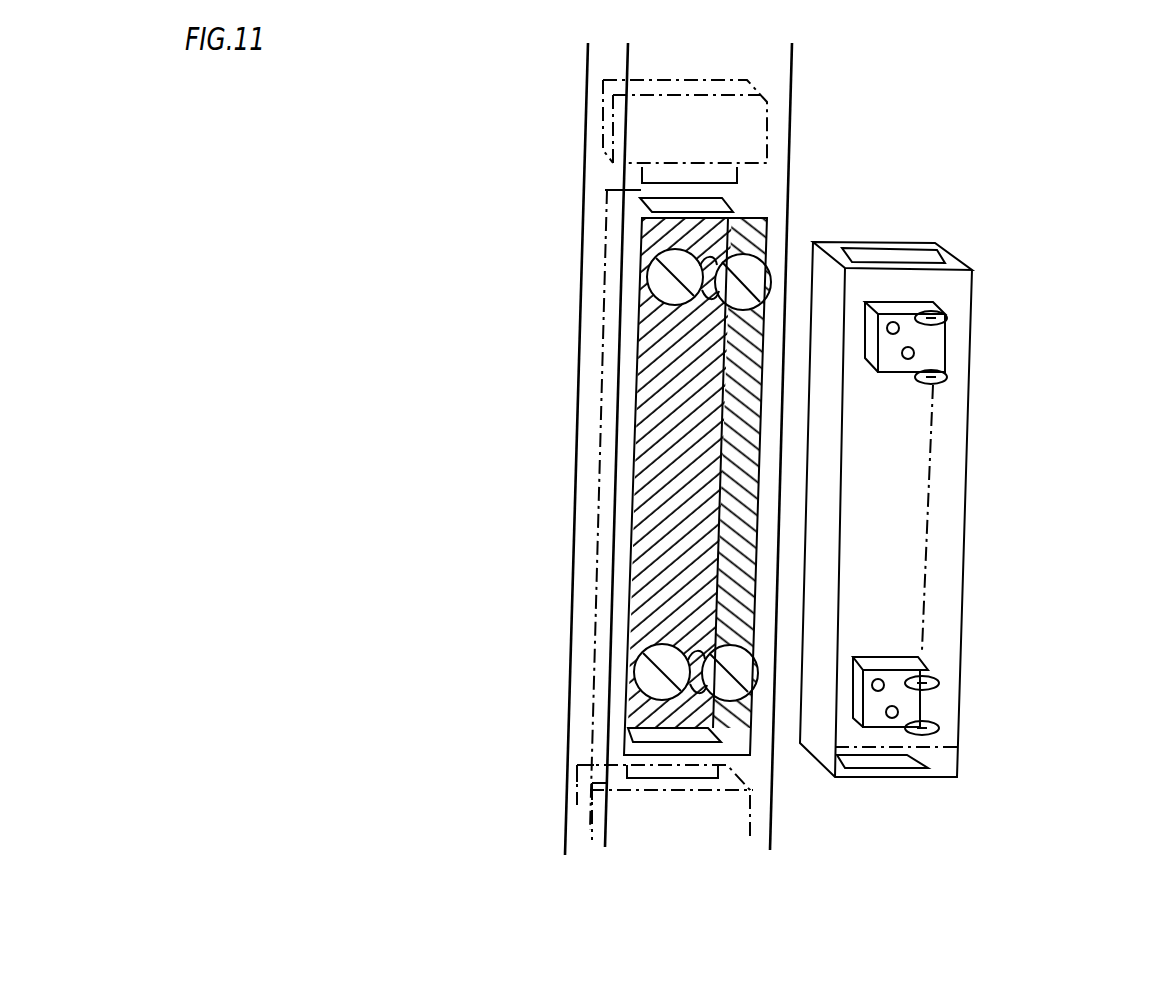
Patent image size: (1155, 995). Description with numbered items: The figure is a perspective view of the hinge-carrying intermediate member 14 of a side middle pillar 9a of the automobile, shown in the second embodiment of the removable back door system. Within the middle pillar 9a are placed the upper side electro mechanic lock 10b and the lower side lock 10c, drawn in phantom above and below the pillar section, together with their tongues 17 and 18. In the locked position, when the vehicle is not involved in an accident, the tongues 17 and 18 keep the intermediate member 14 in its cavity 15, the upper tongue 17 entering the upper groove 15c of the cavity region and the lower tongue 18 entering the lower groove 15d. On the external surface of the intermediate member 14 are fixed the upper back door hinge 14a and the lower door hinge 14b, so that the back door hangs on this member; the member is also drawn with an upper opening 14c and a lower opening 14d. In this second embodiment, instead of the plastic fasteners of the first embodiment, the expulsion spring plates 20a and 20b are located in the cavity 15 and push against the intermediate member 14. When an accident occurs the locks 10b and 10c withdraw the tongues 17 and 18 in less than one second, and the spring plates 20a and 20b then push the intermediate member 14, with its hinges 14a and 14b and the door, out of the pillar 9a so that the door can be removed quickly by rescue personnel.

The middle pillar 9a is at (757, 50).
The upper side electro mechanic lock 10b is at (740, 165).
The lower side lock 10c is at (690, 810).
The intermediate member 14 is at (889, 473).
The upper back door hinge 14a is at (924, 339).
The lower door hinge 14b is at (908, 698).
The upper opening of holder 14c is at (901, 256).
The lower opening of holder 14d is at (881, 762).
The cavity 15 is at (686, 431).
The upper groove of slide block 15c is at (703, 204).
The lower groove of slide block 15d is at (696, 745).
The tongue 17 is at (666, 178).
The tongue 18 is at (661, 775).
The expulsion spring plate 20a is at (738, 272).
The expulsion spring plate 20b is at (728, 670).